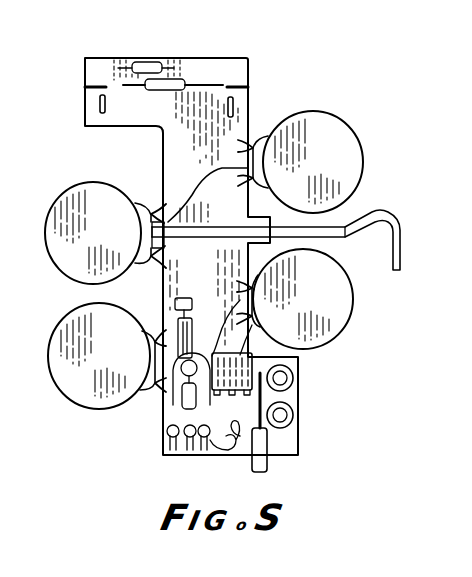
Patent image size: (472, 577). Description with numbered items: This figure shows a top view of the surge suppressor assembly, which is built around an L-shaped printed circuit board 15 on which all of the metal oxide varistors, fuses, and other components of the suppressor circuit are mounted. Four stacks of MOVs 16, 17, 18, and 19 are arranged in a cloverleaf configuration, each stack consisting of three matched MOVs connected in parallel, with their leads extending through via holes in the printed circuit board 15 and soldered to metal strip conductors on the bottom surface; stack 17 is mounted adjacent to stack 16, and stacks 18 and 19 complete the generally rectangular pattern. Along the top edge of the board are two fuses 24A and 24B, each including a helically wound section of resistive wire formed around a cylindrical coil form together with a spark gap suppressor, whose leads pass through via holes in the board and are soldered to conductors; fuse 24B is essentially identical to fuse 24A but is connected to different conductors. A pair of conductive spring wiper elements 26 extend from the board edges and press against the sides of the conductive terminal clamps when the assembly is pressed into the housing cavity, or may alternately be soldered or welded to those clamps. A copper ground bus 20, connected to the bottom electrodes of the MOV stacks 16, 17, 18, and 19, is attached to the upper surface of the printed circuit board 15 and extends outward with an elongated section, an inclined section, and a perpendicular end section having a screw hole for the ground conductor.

The printed circuit board 15 is at (224, 70).
The stack of MOV's 16 is at (322, 171).
The stack of MOV's 17 is at (313, 307).
The stack of MOV's 18 is at (107, 364).
The stack of MOV's 19 is at (105, 247).
The copper ground bus 20 is at (337, 222).
The fuse 24A is at (97, 100).
The fuse 24B is at (240, 107).
The conductive spring wiper elements 26 is at (92, 86).